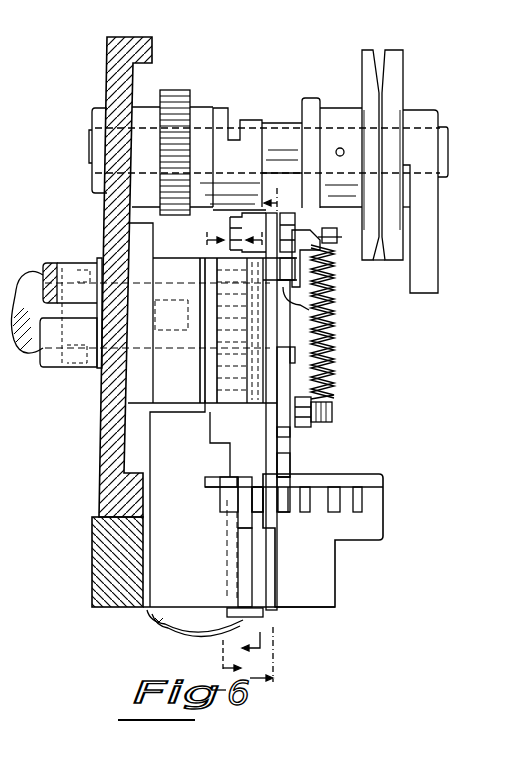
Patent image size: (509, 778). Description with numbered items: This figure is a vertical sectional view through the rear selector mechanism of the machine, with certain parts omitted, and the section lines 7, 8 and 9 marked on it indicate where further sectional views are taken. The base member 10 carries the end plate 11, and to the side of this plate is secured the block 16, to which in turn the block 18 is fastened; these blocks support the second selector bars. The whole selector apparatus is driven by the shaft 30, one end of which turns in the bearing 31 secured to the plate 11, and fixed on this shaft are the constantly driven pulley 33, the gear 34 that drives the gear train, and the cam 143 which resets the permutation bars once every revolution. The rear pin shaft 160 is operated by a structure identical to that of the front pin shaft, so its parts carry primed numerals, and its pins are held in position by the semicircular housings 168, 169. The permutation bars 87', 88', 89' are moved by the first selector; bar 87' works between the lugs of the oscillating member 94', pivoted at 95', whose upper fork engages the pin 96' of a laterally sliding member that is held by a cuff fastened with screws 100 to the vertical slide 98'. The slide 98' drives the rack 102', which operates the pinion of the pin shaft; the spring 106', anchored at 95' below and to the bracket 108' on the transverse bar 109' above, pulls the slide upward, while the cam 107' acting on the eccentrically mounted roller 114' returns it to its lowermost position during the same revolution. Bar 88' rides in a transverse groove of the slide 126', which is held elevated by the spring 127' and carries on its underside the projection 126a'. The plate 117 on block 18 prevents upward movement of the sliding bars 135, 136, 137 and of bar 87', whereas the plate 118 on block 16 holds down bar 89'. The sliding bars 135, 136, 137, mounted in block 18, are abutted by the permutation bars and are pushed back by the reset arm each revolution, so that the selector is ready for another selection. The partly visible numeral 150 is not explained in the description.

The section line 7- 7 is at (275, 429).
The section line 8- 8 is at (249, 432).
The section line 9- 9 is at (220, 444).
The base member 10 is at (92, 570).
The end plate 11 is at (107, 44).
The block 16 is at (239, 503).
The block 18 is at (330, 582).
The shaft 30 is at (449, 151).
The bearing 31 is at (436, 212).
The pulley 33 is at (398, 60).
The gear 34 is at (180, 94).
The permutation bar 87' is at (300, 526).
The permutation bar 88' is at (284, 541).
The permutation bar 89' is at (215, 502).
The oscillating member 94' is at (322, 378).
The oscillation mounting 95' is at (335, 412).
The pin 96' is at (333, 359).
The vertical slide 98' is at (262, 411).
The screws 100 is at (309, 308).
The rack 102' is at (171, 313).
The spring 106' is at (347, 322).
The cam 107' is at (236, 144).
The bracket 108' is at (325, 243).
The transverse bar 109' is at (360, 299).
The roller 114' is at (232, 201).
The plate 117 is at (377, 480).
The plate 118 is at (205, 477).
The slide 126' is at (216, 529).
The projection 126a' is at (291, 622).
The spring 127' is at (195, 628).
The sliding bar 135 is at (358, 491).
The sliding bar 136 is at (356, 512).
The sliding bar 137 is at (306, 512).
The cam 143 is at (310, 97).
The support 150 is at (12, 508).
The rear pin shaft 160 is at (30, 280).
The housing 168 is at (72, 262).
The housing 169 is at (55, 366).